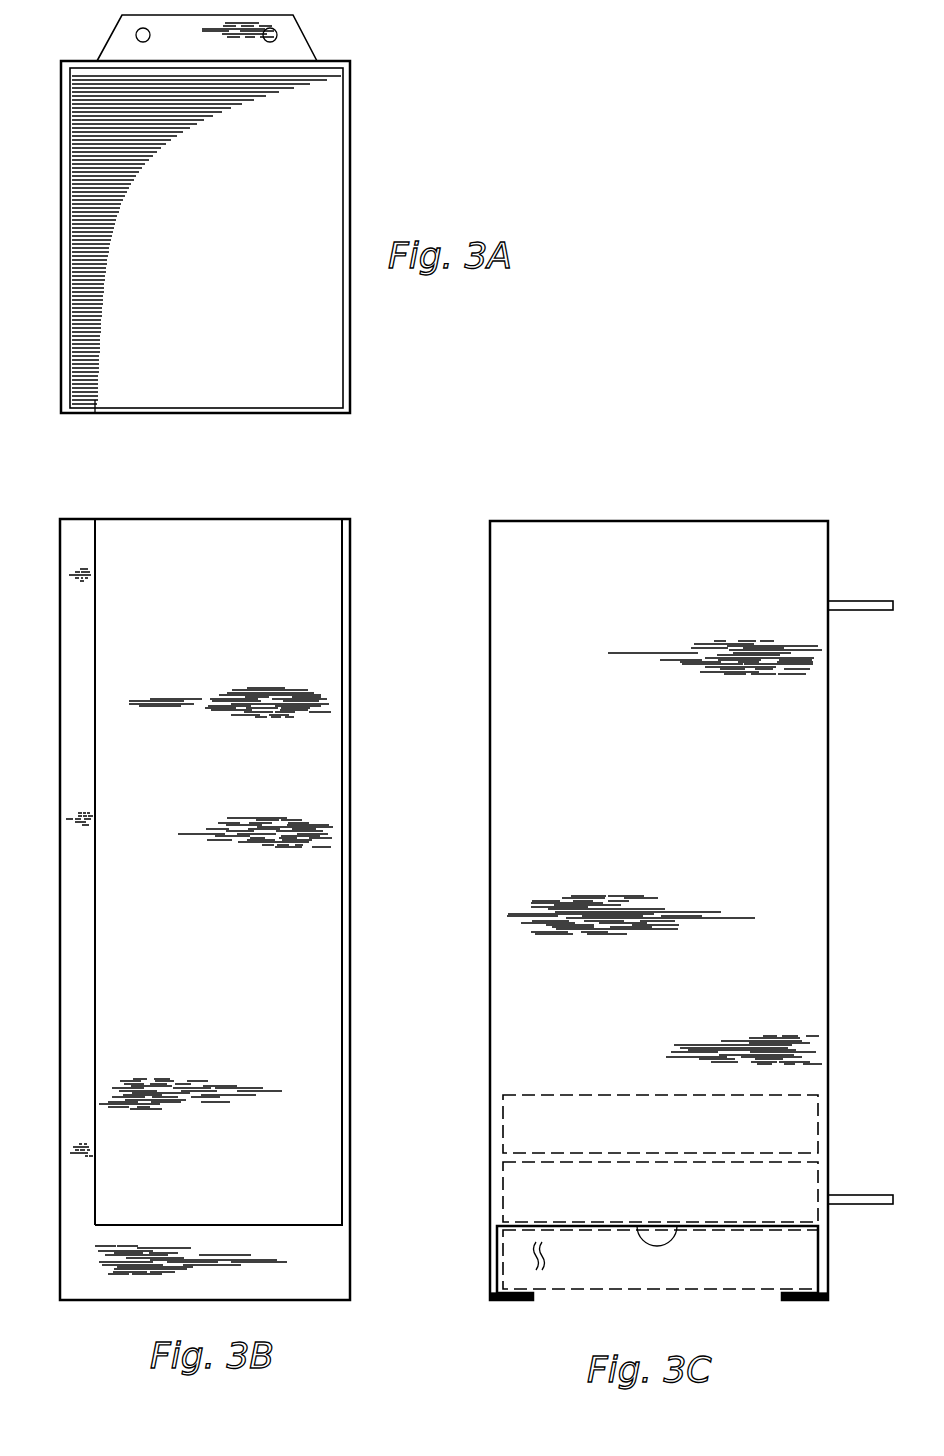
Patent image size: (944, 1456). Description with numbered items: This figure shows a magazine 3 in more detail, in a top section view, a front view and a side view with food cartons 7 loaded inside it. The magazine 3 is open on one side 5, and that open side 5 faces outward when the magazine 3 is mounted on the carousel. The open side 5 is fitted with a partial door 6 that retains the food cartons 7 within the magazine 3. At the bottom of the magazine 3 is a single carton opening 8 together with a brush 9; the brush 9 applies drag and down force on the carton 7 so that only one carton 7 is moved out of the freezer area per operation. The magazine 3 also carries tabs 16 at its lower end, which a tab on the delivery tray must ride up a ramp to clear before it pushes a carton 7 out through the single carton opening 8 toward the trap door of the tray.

In FIG. 3A, the magazine 3 is at (351, 355).
In FIG. 3B, the magazine 3 is at (350, 610).
In FIG. 3C, the magazine 3 is at (489, 640).
In FIG. 3A, the open side 5 is at (168, 414).
In FIG. 3B, the open side 5 is at (222, 999).
In FIG. 3C, the open side 5 is at (489, 992).
In FIG. 3A, the partial door 6 is at (78, 415).
In FIG. 3B, the partial door 6 is at (83, 533).
In FIG. 3C, the food carton 7 is at (520, 1193).
In FIG. 3C, the single carton opening 8 is at (530, 1258).
In FIG. 3C, the brush 9 is at (657, 1246).
In FIG. 3C, the tabs 16 is at (518, 1302).